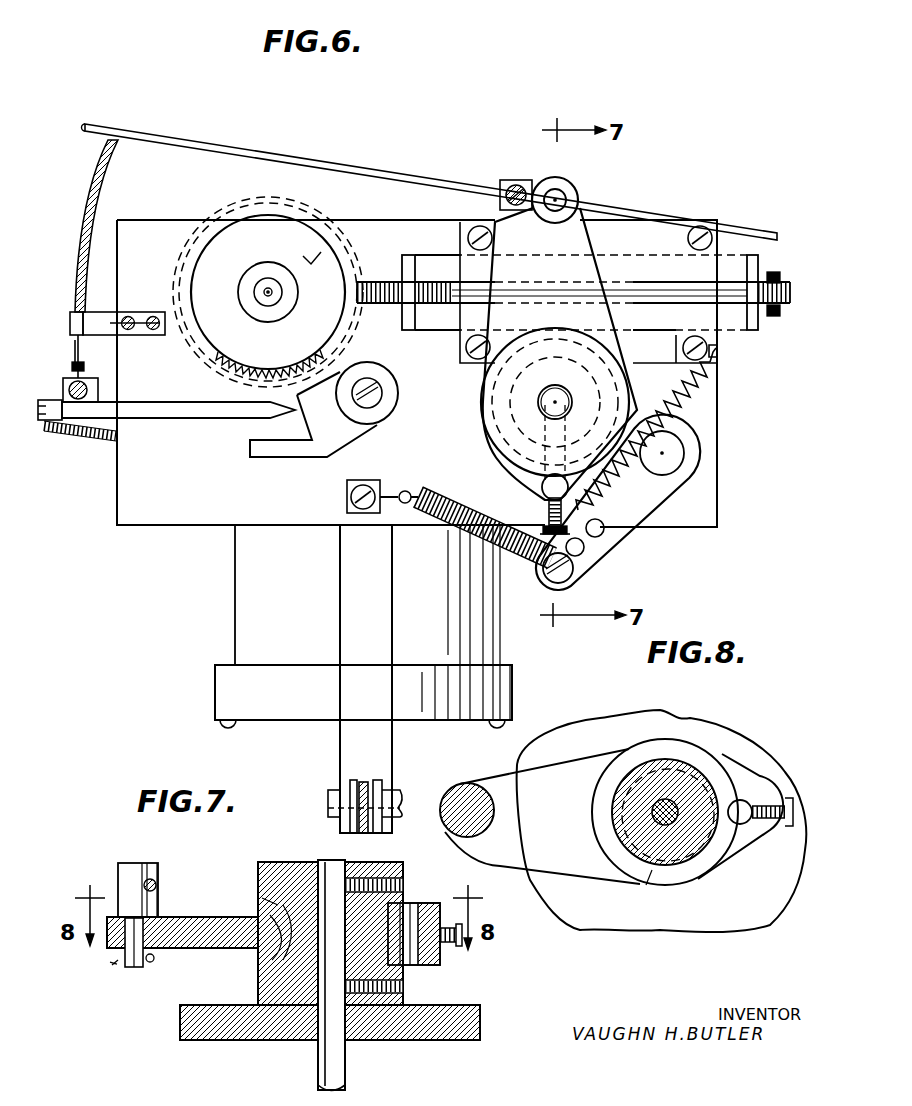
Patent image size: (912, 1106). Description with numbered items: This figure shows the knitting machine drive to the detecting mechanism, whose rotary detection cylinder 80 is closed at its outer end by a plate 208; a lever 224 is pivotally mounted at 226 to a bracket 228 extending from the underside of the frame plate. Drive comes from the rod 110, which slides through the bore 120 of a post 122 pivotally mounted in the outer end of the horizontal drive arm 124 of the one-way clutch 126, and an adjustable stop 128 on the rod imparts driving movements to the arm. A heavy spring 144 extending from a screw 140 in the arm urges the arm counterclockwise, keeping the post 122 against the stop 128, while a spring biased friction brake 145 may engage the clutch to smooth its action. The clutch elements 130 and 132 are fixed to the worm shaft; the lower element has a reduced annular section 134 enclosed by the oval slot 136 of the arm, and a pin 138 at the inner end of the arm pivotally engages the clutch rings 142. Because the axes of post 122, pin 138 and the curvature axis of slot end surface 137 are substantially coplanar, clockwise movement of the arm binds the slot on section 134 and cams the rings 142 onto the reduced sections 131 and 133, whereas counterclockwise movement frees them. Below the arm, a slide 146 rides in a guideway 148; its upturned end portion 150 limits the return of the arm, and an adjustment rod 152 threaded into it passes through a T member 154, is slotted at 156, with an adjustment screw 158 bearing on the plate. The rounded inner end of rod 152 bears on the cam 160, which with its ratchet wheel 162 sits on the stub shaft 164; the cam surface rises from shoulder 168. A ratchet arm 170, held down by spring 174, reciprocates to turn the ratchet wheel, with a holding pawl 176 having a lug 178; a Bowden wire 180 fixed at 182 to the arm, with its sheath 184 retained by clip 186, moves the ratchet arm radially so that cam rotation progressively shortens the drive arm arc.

In FIG. 6, the rod 110 is at (163, 138).
In FIG. 6, the sheath 184 is at (78, 262).
In FIG. 6, the clip 186 is at (129, 318).
In FIG. 6, the Bowden wire 180 is at (77, 354).
In FIG. 6, the fixing point 182 is at (98, 391).
In FIG. 6, the ratchet arm 170 is at (190, 418).
In FIG. 6, the spring 174 is at (100, 442).
In FIG. 6, the lug 178 is at (273, 457).
In FIG. 6, the holding pawl 176 is at (368, 419).
In FIG. 6, the ratchet wheel 162 is at (330, 218).
In FIG. 6, the cam 160 is at (304, 258).
In FIG. 6, the shoulder 168 is at (322, 254).
In FIG. 6, the stub shaft 164 is at (273, 292).
In FIG. 6, the adjustment rod 152 is at (379, 281).
In FIG. 6, the slide end portion 150 is at (407, 331).
In FIG. 6, the slide 146 is at (428, 330).
In FIG. 6, the guideway 148 is at (466, 360).
In FIG. 6, the T member 154 is at (753, 331).
In FIG. 6, the slot 156 is at (781, 291).
In FIG. 6, the adjustment screw 158 is at (778, 312).
In FIG. 6, the adjustable stop 128 is at (520, 172).
In FIG. 6, the post 122 is at (573, 200).
In FIG. 7, the post 122 is at (133, 870).
In FIG. 8, the post 122 is at (459, 790).
In FIG. 6, the drive arm 124 is at (560, 276).
In FIG. 7, the drive arm 124 is at (142, 952).
In FIG. 8, the drive arm 124 is at (519, 866).
In FIG. 6, the one-way clutch 126 is at (482, 433).
In FIG. 7, the one-way clutch 126 is at (278, 858).
In FIG. 6, the screw 140 is at (545, 500).
In FIG. 7, the screw 140 is at (460, 944).
In FIG. 8, the screw 140 is at (787, 822).
In FIG. 6, the heavy spring 144 is at (692, 392).
In FIG. 6, the friction brake 145 is at (624, 532).
In FIG. 6, the detection cylinder 80 is at (240, 603).
In FIG. 6, the bracket 228 is at (387, 622).
In FIG. 6, the plate 208 is at (276, 722).
In FIG. 6, the lever 224 is at (377, 786).
In FIG. 6, the pivot 226 is at (382, 799).
In FIG. 7, the bore 120 is at (153, 890).
In FIG. 7, the clutch element 130 is at (258, 880).
In FIG. 7, the reduced section 131 is at (262, 898).
In FIG. 8, the reduced section 131 is at (618, 797).
In FIG. 7, the oval slot 136 is at (277, 928).
In FIG. 8, the oval slot 136 is at (650, 878).
In FIG. 7, the reduced annular section 134 is at (270, 950).
In FIG. 7, the clutch element 132 is at (262, 995).
In FIG. 7, the reduced section 133 is at (258, 1040).
In FIG. 7, the pin 138 is at (406, 904).
In FIG. 8, the pin 138 is at (748, 805).
In FIG. 7, the clutch rings 142 is at (440, 905).
In FIG. 8, the clutch rings 142 is at (674, 748).
In FIG. 8, the slot end surface 137 is at (706, 768).